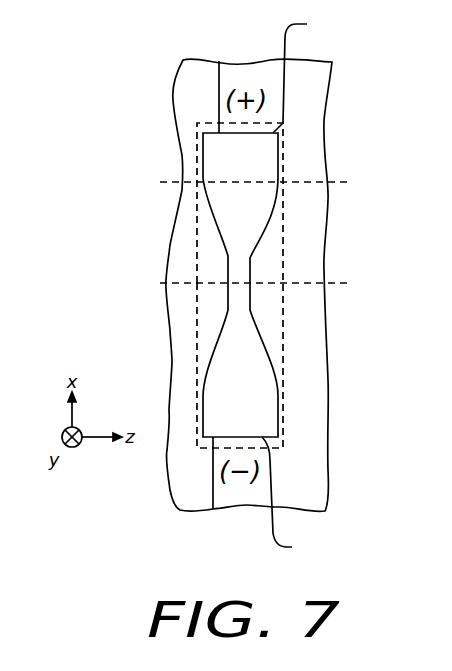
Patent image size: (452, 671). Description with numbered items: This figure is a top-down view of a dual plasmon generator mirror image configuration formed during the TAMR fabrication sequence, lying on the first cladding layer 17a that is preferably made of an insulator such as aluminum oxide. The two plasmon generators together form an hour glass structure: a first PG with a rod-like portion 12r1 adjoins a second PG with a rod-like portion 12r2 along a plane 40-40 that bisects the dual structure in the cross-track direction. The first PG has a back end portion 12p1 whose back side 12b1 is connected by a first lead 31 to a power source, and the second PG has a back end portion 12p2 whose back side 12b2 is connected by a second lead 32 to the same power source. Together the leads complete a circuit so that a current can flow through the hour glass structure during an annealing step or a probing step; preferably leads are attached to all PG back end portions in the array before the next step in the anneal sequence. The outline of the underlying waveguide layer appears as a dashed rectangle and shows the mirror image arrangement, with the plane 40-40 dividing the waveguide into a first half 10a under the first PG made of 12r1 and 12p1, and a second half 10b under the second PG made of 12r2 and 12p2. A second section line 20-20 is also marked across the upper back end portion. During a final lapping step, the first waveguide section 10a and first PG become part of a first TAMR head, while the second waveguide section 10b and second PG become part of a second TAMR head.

The back side of second PG 12b2 is at (314, 74).
The back side of first PG 12b1 is at (299, 498).
The back end portion of second PG 12p2 is at (262, 155).
The back end portion of first PG 12p1 is at (262, 399).
The rod-like portion of second PG 12r2 is at (240, 268).
The rod-like portion of first PG 12r1 is at (240, 297).
The second lead 32 is at (219, 80).
The first lead 31 is at (213, 478).
The section line 20- 20 is at (253, 185).
The plane 40- 40 is at (250, 287).
The second half of waveguide layer 10b is at (197, 240).
The first half of waveguide layer 10a is at (197, 352).
The first cladding layer 17a is at (315, 367).